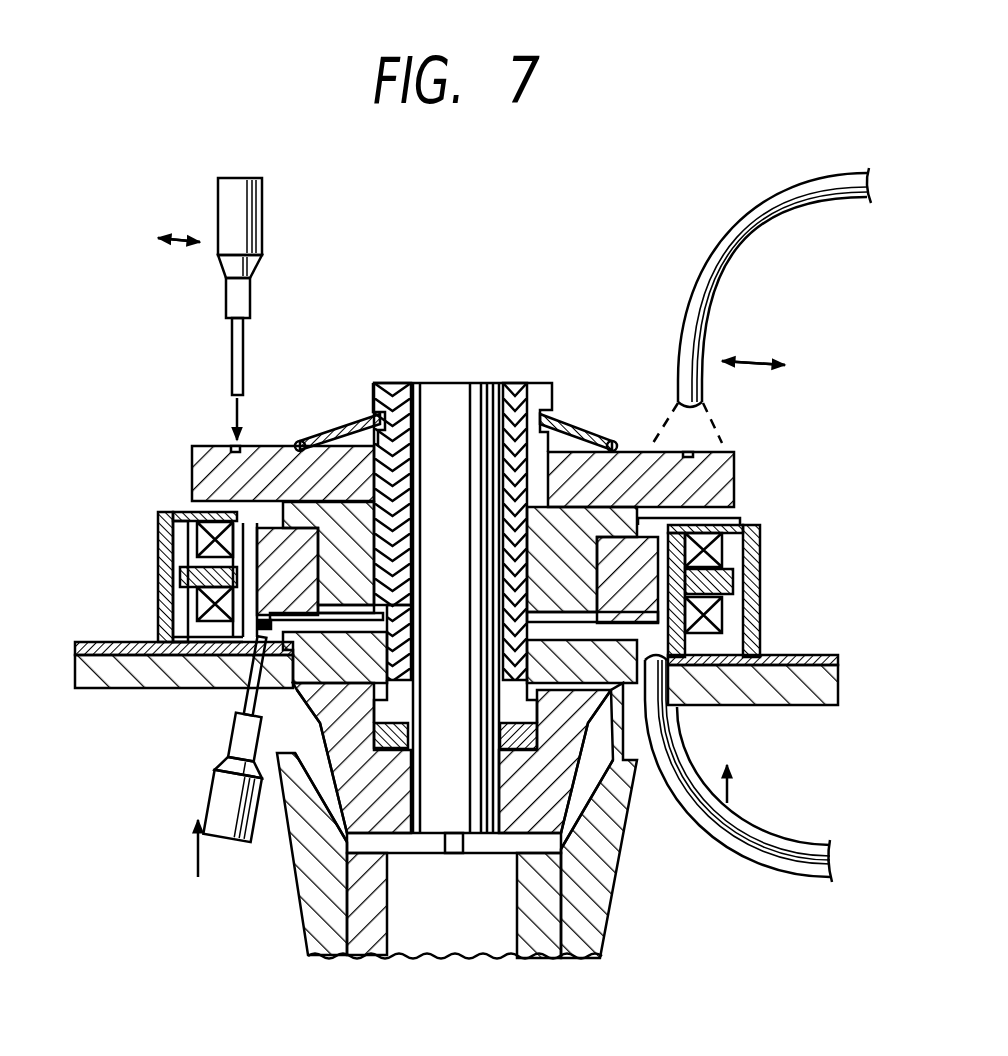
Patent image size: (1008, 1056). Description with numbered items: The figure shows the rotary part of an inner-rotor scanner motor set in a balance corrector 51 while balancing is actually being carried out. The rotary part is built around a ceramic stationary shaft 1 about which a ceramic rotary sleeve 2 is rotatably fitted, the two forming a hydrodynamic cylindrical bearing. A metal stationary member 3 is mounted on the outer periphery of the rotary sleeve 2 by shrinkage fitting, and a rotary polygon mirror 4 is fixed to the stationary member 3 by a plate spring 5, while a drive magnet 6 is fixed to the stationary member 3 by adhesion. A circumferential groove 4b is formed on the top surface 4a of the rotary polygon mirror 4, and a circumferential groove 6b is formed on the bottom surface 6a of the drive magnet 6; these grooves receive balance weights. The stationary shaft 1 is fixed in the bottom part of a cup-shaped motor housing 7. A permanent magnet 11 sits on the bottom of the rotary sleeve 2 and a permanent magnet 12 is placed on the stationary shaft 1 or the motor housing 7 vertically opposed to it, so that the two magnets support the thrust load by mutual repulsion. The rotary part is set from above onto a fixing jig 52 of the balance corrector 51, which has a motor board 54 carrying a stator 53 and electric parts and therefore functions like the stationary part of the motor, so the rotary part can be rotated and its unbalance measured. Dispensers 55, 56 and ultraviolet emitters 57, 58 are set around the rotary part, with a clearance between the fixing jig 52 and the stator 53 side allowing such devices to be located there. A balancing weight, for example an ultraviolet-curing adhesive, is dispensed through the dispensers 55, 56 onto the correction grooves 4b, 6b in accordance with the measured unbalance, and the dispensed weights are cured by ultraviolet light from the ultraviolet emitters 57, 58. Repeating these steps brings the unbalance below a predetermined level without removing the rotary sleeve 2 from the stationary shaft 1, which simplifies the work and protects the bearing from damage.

The stationary shaft 1 is at (455, 405).
The rotary sleeve 2 is at (513, 385).
The stationary member 3 is at (540, 385).
The rotary polygon mirror 4 is at (195, 462).
The top surface of the rotary polygon mirror 4a is at (265, 445).
The circumferential groove 4b is at (232, 445).
The plate spring 5 is at (577, 430).
The drive magnet 6 is at (273, 567).
The bottom surface of the drive magnet 6a is at (247, 687).
The circumferential groove 6b is at (240, 588).
The motor housing 7 is at (573, 817).
The permanent magnet 11 is at (550, 805).
The permanent magnet 12 is at (523, 693).
The balance corrector 51 is at (145, 528).
The fixing jig 52 is at (605, 893).
The stator 53 is at (713, 547).
The motor board 54 is at (790, 660).
The dispenser 55 is at (230, 788).
The dispenser 56 is at (228, 207).
The ultraviolet emitter 57 is at (777, 862).
The ultraviolet emitter 58 is at (813, 190).